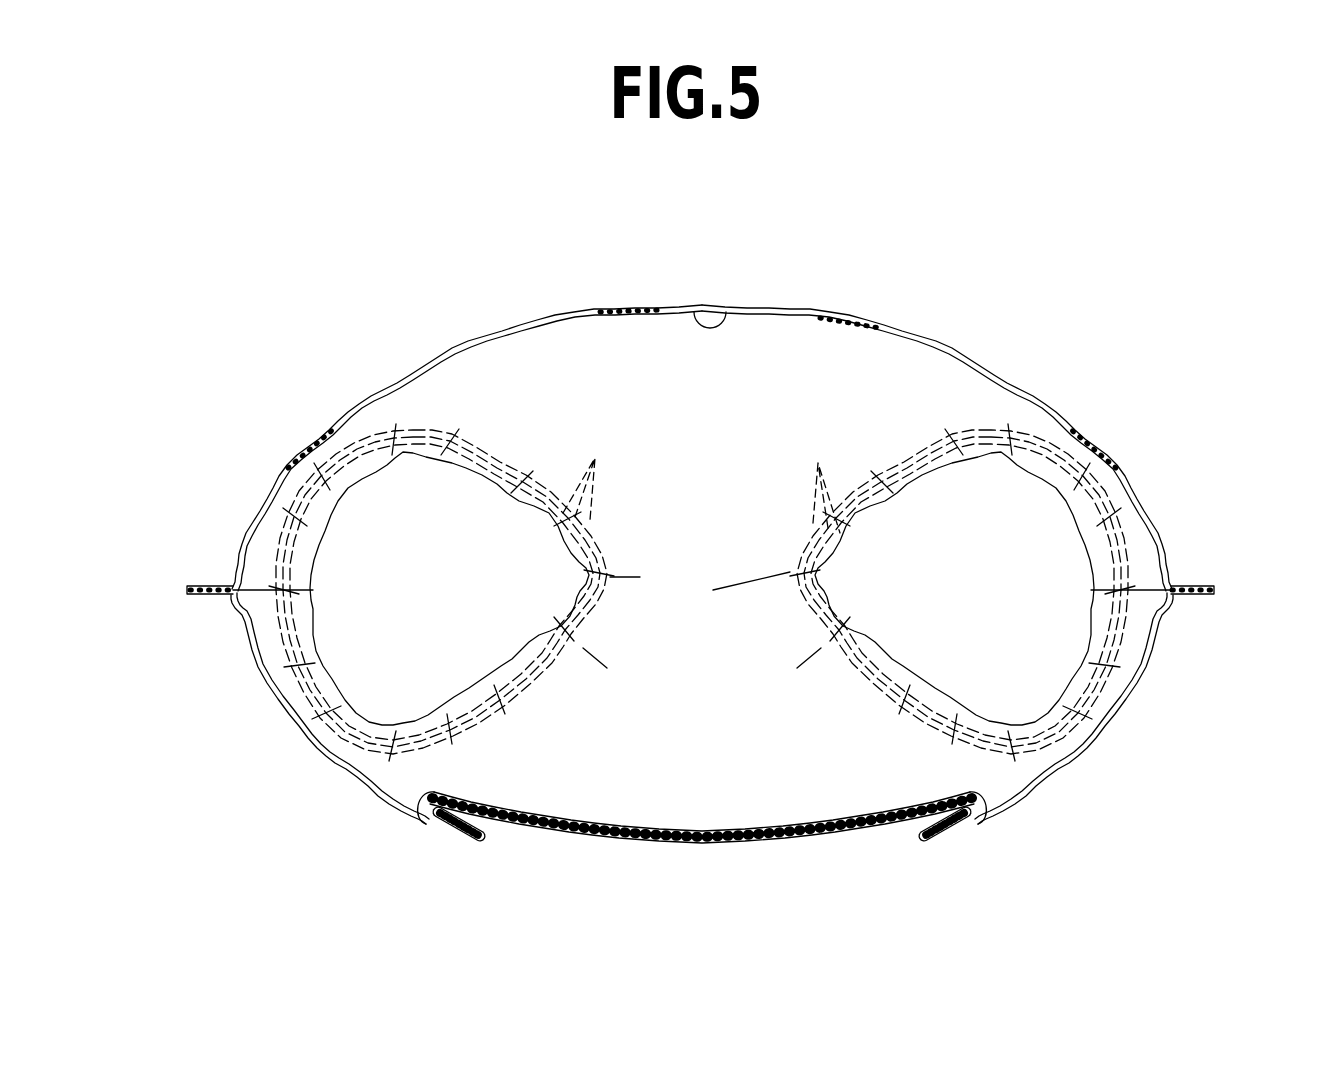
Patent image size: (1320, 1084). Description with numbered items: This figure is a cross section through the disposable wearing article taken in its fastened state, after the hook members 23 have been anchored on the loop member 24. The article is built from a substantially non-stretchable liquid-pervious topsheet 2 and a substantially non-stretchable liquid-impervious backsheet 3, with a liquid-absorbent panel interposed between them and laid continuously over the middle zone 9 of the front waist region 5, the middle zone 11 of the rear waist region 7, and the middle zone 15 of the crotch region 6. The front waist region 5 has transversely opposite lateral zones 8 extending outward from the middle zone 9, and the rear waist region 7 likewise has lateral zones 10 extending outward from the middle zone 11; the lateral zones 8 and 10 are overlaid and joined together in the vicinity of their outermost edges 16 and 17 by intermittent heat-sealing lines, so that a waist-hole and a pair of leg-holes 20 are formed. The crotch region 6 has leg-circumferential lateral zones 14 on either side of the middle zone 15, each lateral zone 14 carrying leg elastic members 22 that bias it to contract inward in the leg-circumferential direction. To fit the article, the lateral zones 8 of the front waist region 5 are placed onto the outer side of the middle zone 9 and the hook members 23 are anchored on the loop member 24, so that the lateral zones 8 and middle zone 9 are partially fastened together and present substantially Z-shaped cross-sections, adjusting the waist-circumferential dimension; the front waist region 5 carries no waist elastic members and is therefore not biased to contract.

The topsheet 2 is at (697, 312).
The backsheet 3 is at (772, 312).
The front waist region 5 is at (782, 840).
The crotch region 6 is at (787, 571).
The rear waist region 7 is at (843, 320).
The lateral zones of the front waist region 8 is at (297, 727).
The middle zone of the front waist region 9 is at (640, 843).
The lateral zones of the rear waist region 10 is at (302, 457).
The middle zone of the rear waist region 11 is at (633, 310).
The lateral zones of the crotch region 14 is at (595, 660).
The middle zone of the crotch region 15 is at (580, 574).
The outermost edge of the front lateral zones 16 is at (228, 600).
The outermost edge of the rear lateral zones 17 is at (232, 586).
The leg-holes 20 is at (380, 505).
The leg elastic members 22 is at (701, 474).
The hook members 23 is at (453, 827).
The loop member 24 is at (723, 845).